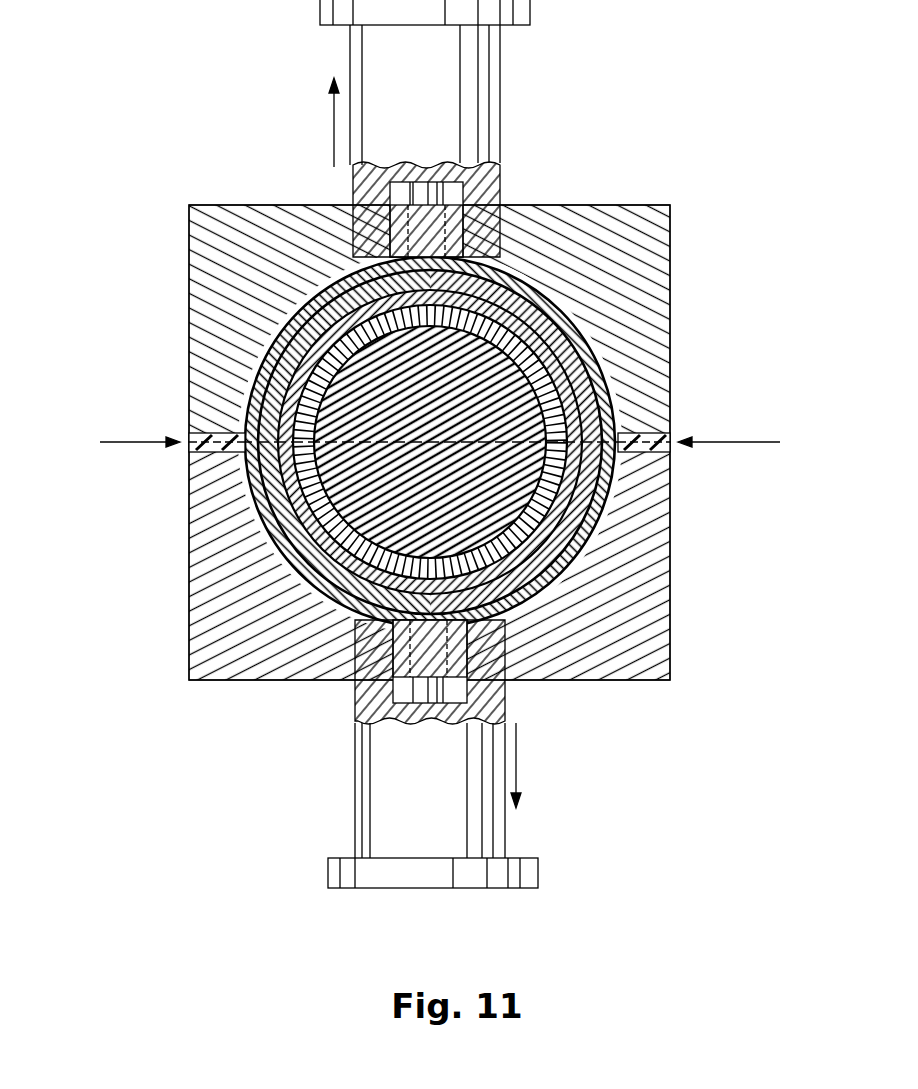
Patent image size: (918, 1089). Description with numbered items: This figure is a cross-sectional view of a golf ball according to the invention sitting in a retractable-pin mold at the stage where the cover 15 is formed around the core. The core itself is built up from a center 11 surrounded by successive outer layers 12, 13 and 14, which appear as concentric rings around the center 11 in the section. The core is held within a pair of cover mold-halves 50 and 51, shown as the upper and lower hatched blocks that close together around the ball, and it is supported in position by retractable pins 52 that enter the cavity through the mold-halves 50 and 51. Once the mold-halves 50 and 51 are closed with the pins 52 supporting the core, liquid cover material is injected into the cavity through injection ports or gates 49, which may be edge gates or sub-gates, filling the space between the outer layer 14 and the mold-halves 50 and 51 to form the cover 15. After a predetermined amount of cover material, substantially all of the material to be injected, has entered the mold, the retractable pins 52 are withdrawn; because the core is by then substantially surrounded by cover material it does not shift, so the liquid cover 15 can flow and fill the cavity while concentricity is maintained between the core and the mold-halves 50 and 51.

The center 11 is at (603, 365).
The outer layer 12 is at (597, 373).
The outer layer 13 is at (530, 297).
The outer layer 14 is at (513, 274).
The cover 15 is at (262, 337).
The injection ports or gates 49 is at (672, 436).
The cover mold-half 50 is at (648, 565).
The cover mold-half 51 is at (673, 380).
The retractable pin 52 is at (487, 662).